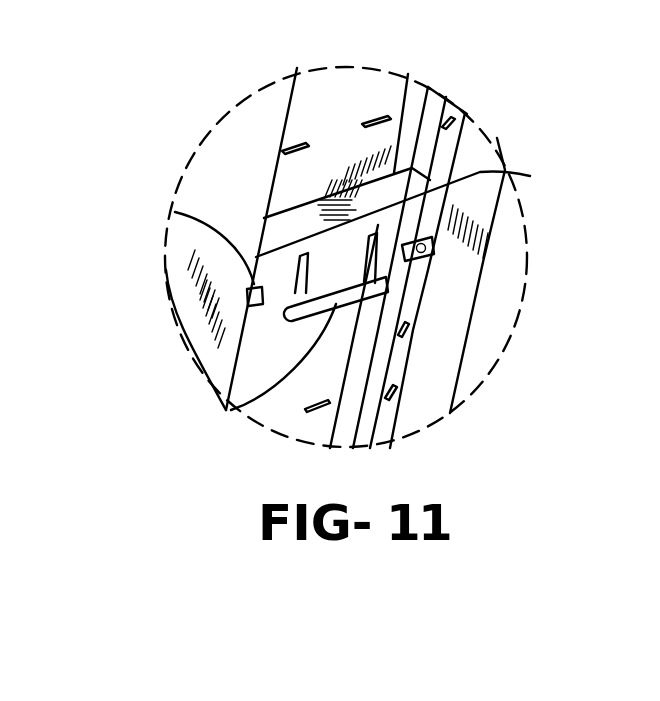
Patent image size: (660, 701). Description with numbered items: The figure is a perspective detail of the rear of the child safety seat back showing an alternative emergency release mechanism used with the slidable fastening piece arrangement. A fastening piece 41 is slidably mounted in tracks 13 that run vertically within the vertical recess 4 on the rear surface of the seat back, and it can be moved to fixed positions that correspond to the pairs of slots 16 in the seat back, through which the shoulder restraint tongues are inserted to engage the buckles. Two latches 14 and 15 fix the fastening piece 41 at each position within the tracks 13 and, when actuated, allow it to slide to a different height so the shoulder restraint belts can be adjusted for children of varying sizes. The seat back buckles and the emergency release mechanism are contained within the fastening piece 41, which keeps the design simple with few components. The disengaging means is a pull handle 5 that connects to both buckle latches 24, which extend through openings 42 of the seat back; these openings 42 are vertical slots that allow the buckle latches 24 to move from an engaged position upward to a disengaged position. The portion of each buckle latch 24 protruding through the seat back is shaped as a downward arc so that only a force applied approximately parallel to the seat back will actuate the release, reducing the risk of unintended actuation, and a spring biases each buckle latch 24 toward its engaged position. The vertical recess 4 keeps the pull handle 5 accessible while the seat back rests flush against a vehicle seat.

The vertical recess 4 is at (472, 156).
The pull handle 5 is at (246, 409).
The tracks 13 is at (399, 367).
The latch 14 is at (434, 245).
The latch 15 is at (176, 212).
The slots 16 is at (371, 115).
The buckle latches 24 is at (377, 265).
The fastening piece 41 is at (294, 223).
The openings 42 is at (340, 204).